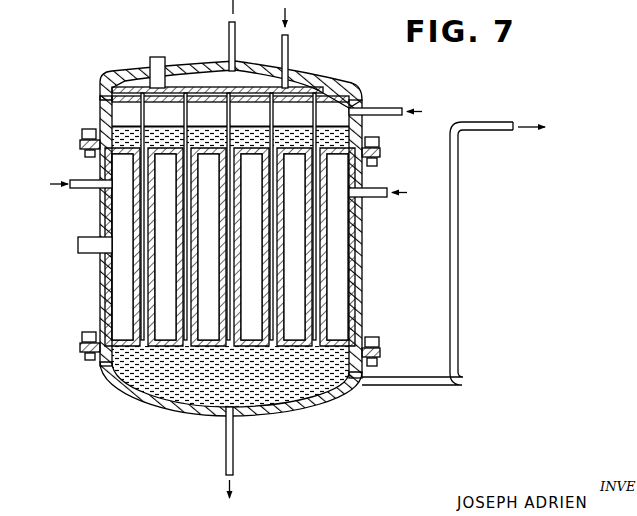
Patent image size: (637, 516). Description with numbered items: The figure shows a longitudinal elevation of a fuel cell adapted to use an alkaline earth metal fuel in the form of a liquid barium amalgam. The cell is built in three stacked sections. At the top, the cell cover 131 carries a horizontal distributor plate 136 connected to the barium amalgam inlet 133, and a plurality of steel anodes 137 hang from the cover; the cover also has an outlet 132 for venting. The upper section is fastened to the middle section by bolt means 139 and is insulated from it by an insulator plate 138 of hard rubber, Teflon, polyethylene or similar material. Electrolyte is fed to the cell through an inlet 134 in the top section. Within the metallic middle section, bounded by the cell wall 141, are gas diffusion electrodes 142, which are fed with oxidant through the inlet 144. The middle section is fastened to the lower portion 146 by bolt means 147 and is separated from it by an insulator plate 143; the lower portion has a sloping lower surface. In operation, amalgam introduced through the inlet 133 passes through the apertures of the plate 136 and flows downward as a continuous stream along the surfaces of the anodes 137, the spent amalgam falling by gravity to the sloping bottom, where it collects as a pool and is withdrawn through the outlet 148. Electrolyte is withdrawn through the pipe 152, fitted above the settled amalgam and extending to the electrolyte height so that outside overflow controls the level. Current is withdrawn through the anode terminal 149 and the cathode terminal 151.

The cell cover 131 is at (334, 74).
The outlet 132 is at (235, 33).
The barium amalgam inlet 133 is at (289, 44).
The inlet 134 is at (383, 109).
The horizontal distributor plate 136 is at (186, 114).
The steel anodes 137 is at (188, 114).
The insulator plate 138 is at (85, 143).
The bolt means 139 is at (90, 128).
The vessel wall 141 is at (364, 238).
The gas diffusion electrodes 142 is at (207, 343).
The insulator plate 143 is at (80, 345).
The inlet 144 is at (78, 190).
The lower portion 146 is at (178, 403).
The bolt means 147 is at (88, 328).
The outlet 148 is at (234, 458).
The anode terminal 149 is at (158, 57).
The cathode terminal 151 is at (82, 251).
The pipe 152 is at (487, 122).